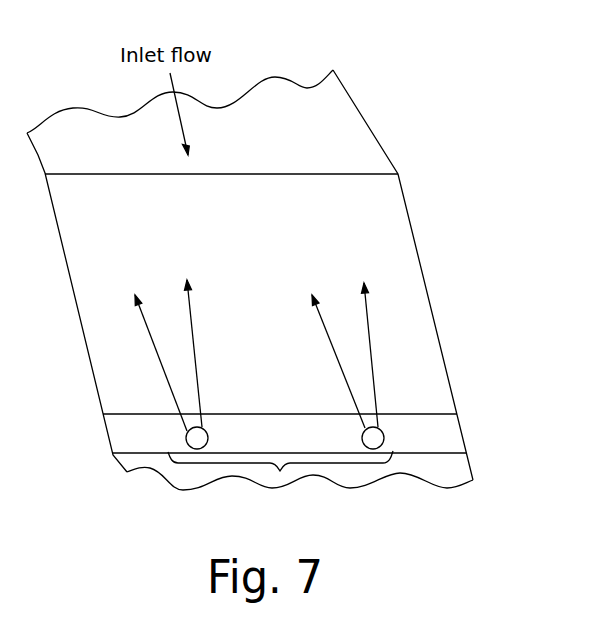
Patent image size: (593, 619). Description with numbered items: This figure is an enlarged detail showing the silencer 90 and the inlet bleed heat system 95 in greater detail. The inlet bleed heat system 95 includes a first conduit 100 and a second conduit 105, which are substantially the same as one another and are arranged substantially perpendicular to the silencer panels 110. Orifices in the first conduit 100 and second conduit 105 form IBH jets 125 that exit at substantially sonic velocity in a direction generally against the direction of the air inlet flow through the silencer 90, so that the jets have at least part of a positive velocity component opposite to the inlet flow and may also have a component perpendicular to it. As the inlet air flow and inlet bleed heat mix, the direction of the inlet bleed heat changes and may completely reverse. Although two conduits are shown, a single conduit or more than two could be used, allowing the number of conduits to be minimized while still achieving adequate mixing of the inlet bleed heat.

The silencer 90 is at (407, 210).
The silencer panels 110 is at (353, 247).
The IBH jets 125 is at (372, 353).
The first conduit 100 is at (384, 440).
The second conduit 105 is at (195, 440).
The inlet bleed heat system 95 is at (282, 474).